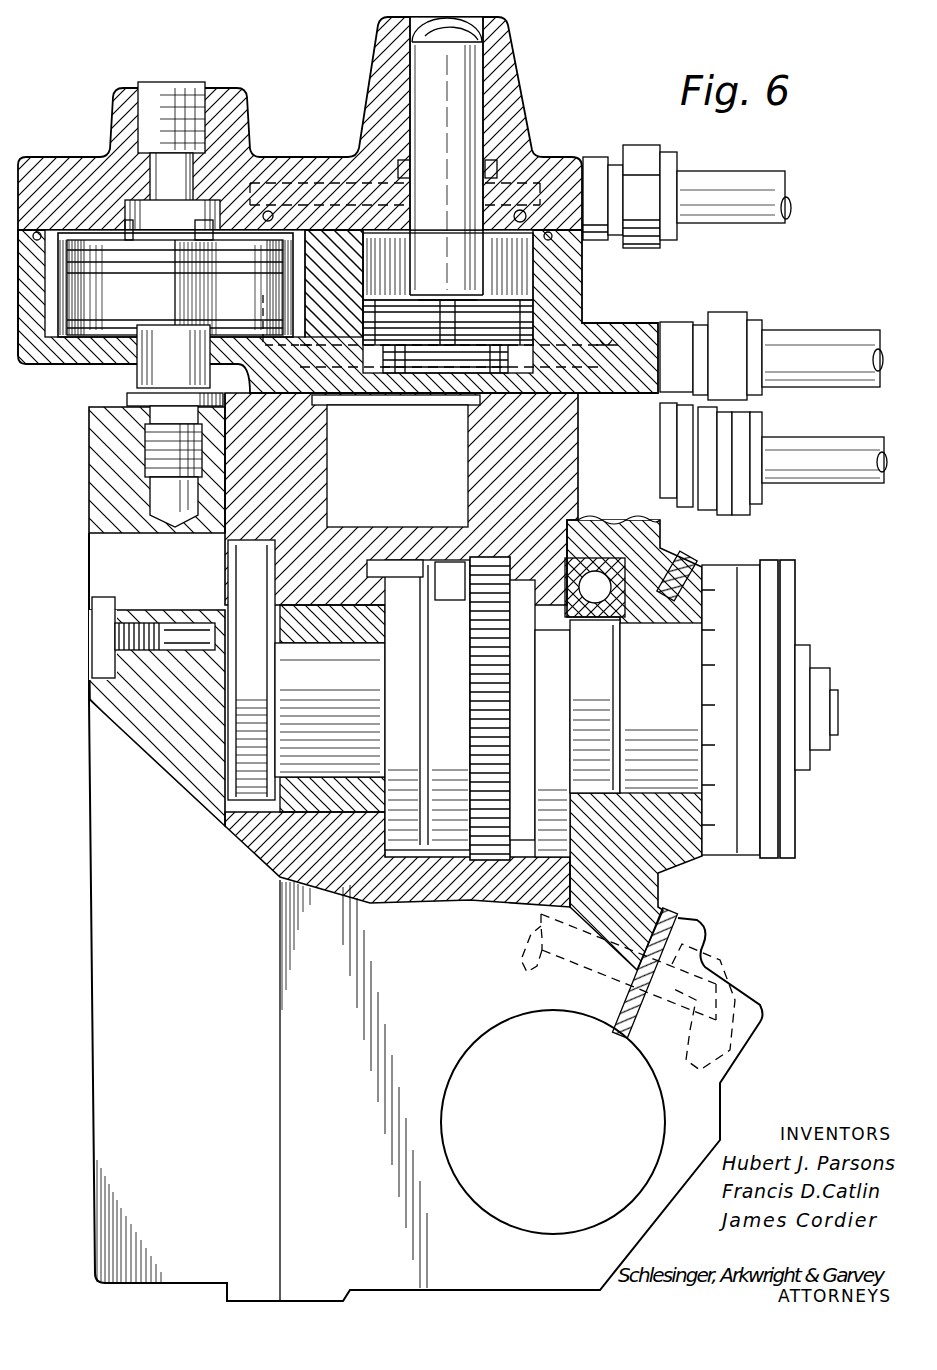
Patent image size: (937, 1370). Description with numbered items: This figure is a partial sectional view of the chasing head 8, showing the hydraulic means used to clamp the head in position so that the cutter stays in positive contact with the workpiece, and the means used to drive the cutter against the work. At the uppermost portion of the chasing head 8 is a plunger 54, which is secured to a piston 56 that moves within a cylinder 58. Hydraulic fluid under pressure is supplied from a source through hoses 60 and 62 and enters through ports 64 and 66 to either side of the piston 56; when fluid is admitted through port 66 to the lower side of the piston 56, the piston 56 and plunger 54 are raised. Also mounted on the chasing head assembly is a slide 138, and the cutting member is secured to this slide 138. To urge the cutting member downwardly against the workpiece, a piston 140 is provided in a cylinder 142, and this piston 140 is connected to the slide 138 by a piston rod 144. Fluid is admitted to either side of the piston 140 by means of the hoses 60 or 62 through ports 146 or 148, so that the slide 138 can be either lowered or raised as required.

The chasing head 8 is at (292, 77).
The plunger 54 is at (468, 73).
The piston 56 is at (505, 295).
The cylinder 58 is at (368, 264).
The hose 60 is at (726, 208).
The hose 62 is at (822, 344).
The port 64 is at (527, 216).
The port 66 is at (612, 322).
The slide 138 is at (192, 966).
The piston 140 is at (137, 307).
The cylinder 142 is at (62, 337).
The piston rod 144 is at (150, 372).
The port 146 is at (275, 216).
The port 148 is at (265, 343).